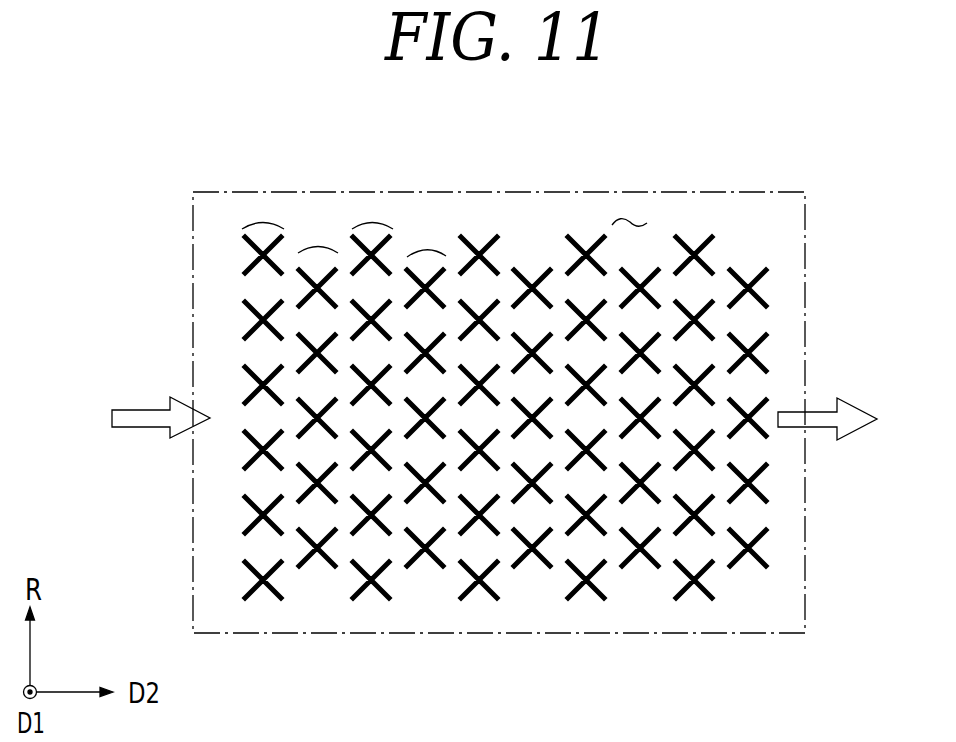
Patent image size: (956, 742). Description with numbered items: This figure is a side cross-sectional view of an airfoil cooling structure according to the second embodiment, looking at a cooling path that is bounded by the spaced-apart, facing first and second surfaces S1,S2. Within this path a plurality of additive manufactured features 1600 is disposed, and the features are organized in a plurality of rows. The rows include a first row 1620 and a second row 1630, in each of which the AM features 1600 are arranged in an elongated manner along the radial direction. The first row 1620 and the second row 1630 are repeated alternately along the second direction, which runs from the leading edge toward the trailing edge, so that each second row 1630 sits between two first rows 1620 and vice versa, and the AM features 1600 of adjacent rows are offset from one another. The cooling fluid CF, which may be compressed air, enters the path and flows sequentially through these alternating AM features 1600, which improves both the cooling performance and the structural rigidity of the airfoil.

The additive manufactured feature 1600 is at (258, 320).
The first row 1620 is at (259, 222).
The second row 1630 is at (315, 245).
The first surface and second surface S1,S2 is at (628, 214).
The cooling fluid CF is at (127, 421).